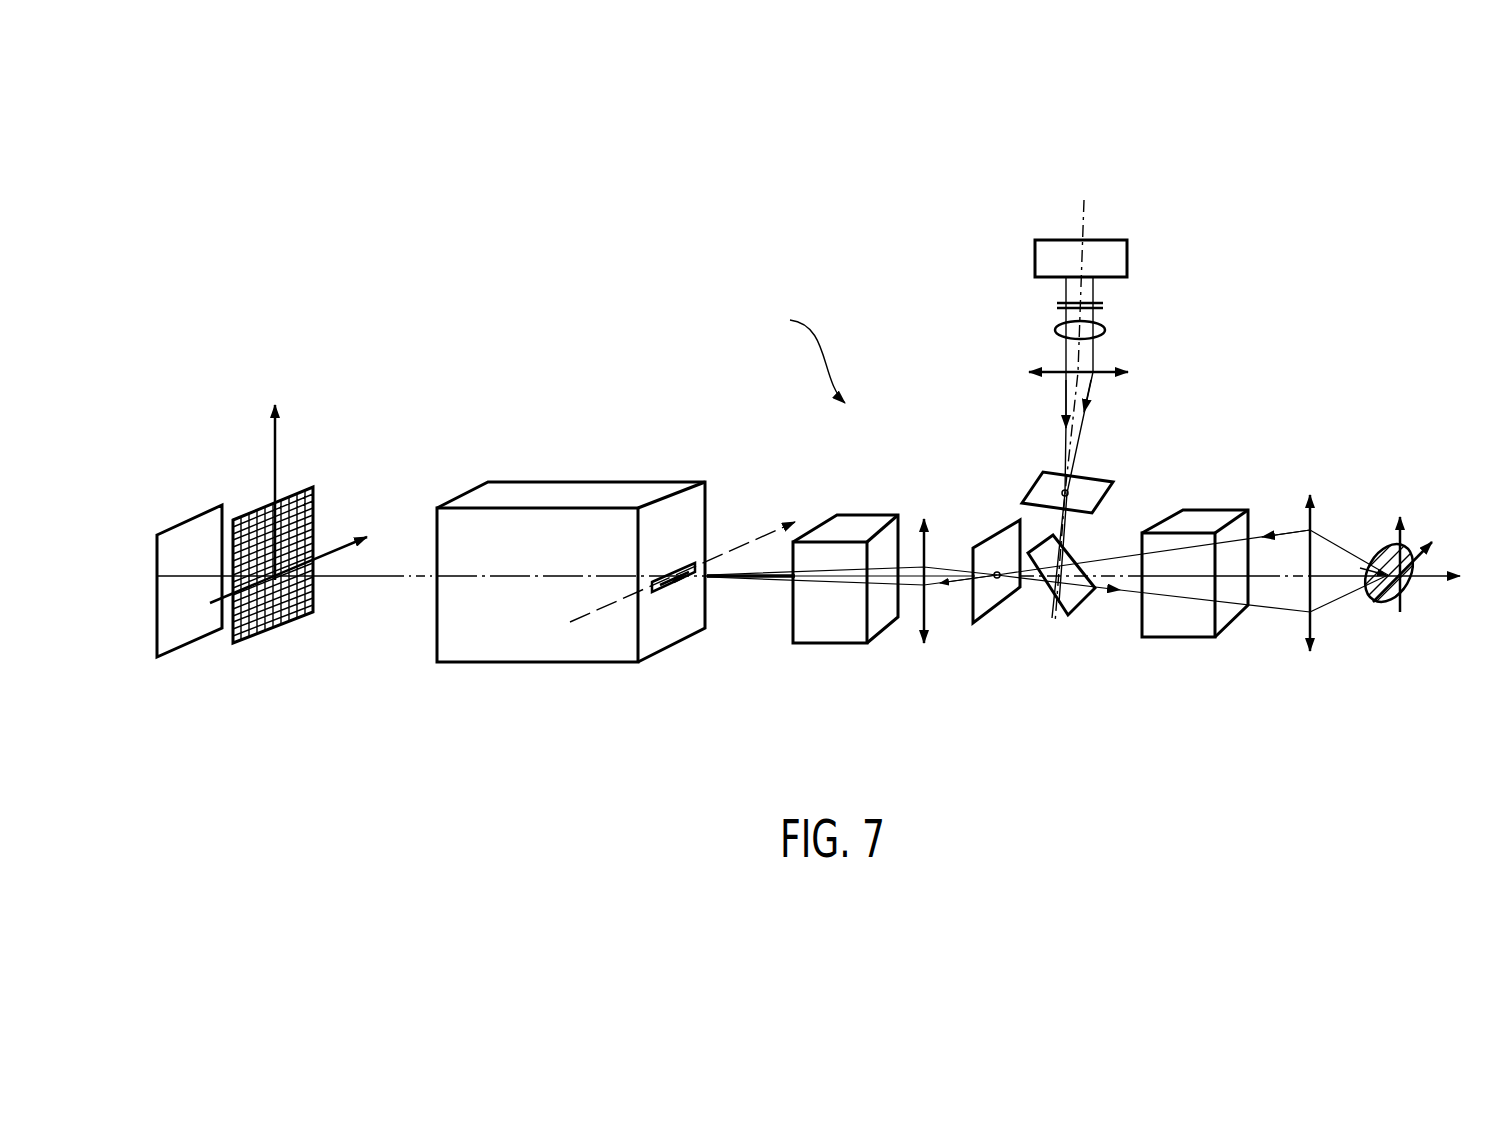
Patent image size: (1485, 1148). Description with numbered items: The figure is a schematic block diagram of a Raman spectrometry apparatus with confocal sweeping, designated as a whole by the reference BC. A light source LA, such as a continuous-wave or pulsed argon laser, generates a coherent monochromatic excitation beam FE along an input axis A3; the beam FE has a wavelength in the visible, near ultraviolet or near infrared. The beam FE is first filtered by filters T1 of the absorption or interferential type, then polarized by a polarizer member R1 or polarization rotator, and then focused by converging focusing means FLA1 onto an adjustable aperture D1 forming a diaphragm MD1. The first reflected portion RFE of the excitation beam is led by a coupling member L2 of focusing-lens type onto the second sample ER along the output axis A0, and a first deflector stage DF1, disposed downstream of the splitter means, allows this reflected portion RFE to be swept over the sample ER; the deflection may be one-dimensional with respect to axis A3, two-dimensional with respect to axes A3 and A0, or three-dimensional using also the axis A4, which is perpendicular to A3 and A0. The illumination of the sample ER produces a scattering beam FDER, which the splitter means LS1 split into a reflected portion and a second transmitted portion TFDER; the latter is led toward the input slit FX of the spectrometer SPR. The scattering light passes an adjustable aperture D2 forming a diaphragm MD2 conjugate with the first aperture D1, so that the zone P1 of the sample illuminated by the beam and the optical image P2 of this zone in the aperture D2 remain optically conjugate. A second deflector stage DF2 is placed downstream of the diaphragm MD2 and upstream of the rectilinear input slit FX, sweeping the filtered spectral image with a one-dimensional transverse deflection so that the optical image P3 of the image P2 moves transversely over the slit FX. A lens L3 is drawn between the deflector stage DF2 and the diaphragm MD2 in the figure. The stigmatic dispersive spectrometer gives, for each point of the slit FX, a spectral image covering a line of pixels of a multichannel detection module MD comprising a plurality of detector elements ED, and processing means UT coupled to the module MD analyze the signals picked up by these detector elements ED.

The processing means UT is at (222, 505).
The multichannel detection module MD is at (297, 566).
The detector elements ED is at (245, 640).
The output axis A0 is at (551, 577).
The spectrometer SPR is at (612, 482).
The input slit FX is at (660, 592).
The optical image P3 is at (690, 578).
The second transmitted portion TFDER is at (1035, 578).
The second deflector stage DF2 is at (820, 643).
The third lens L3 is at (924, 645).
The diaphragm MD2 is at (976, 599).
The adjustable aperture D2 is at (1000, 550).
The optical image P2 is at (997, 580).
The splitter means LS1 is at (1068, 617).
The first reflected portion RFE is at (1125, 595).
The first deflector stage DF1 is at (1195, 637).
The coupling member L2 is at (1310, 653).
The scattering beam FDER is at (1283, 530).
The zone of the sample P1 is at (1375, 593).
The second sample ER is at (1390, 607).
The axis A4 is at (1414, 559).
The input axis A3 is at (1088, 207).
The light source LA is at (1127, 257).
The coherent-excitation beam FE is at (1066, 355).
The filters T1 is at (1057, 303).
The polarizer member R1 is at (1105, 330).
The focusing means FLA1 is at (1130, 375).
The diaphragm MD1 is at (1106, 474).
The adjustable aperture D1 is at (1068, 492).
The Raman spectrometry apparatus with confocal sweeping BC is at (797, 353).